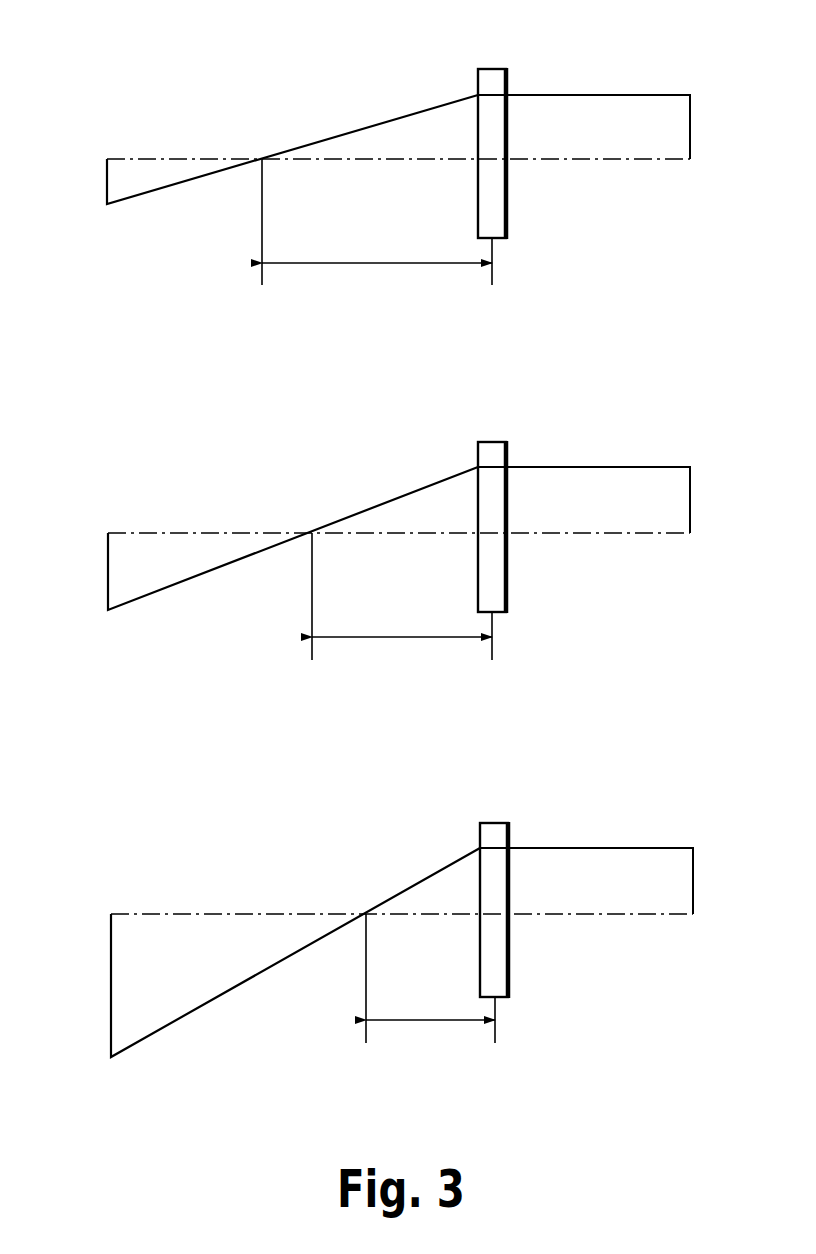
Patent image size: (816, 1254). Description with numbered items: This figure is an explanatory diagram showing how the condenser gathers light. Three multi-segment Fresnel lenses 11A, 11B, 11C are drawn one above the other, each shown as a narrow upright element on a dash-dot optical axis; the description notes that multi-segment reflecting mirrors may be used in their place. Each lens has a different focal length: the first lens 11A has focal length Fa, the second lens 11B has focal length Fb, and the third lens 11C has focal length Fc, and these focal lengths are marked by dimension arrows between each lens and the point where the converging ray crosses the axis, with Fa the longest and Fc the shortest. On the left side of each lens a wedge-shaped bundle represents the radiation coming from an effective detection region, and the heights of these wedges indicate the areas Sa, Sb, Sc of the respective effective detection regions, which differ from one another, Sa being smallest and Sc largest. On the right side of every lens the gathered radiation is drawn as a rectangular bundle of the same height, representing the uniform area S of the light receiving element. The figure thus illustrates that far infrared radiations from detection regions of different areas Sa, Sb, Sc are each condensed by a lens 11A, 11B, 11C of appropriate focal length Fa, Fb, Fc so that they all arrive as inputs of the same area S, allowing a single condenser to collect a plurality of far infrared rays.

The multi-segment Fresnel lens 11A is at (493, 69).
The multi-segment Fresnel lens 11B is at (495, 442).
The multi-segment Fresnel lens 11C is at (497, 823).
The area of light receiving element S is at (600, 504).
The area of effective detection region Sa is at (268, 149).
The area of effective detection region Sb is at (268, 538).
The area of effective detection region Sc is at (270, 952).
The focal length Fa is at (377, 229).
The focal length Fb is at (402, 603).
The focal length Fc is at (430, 985).